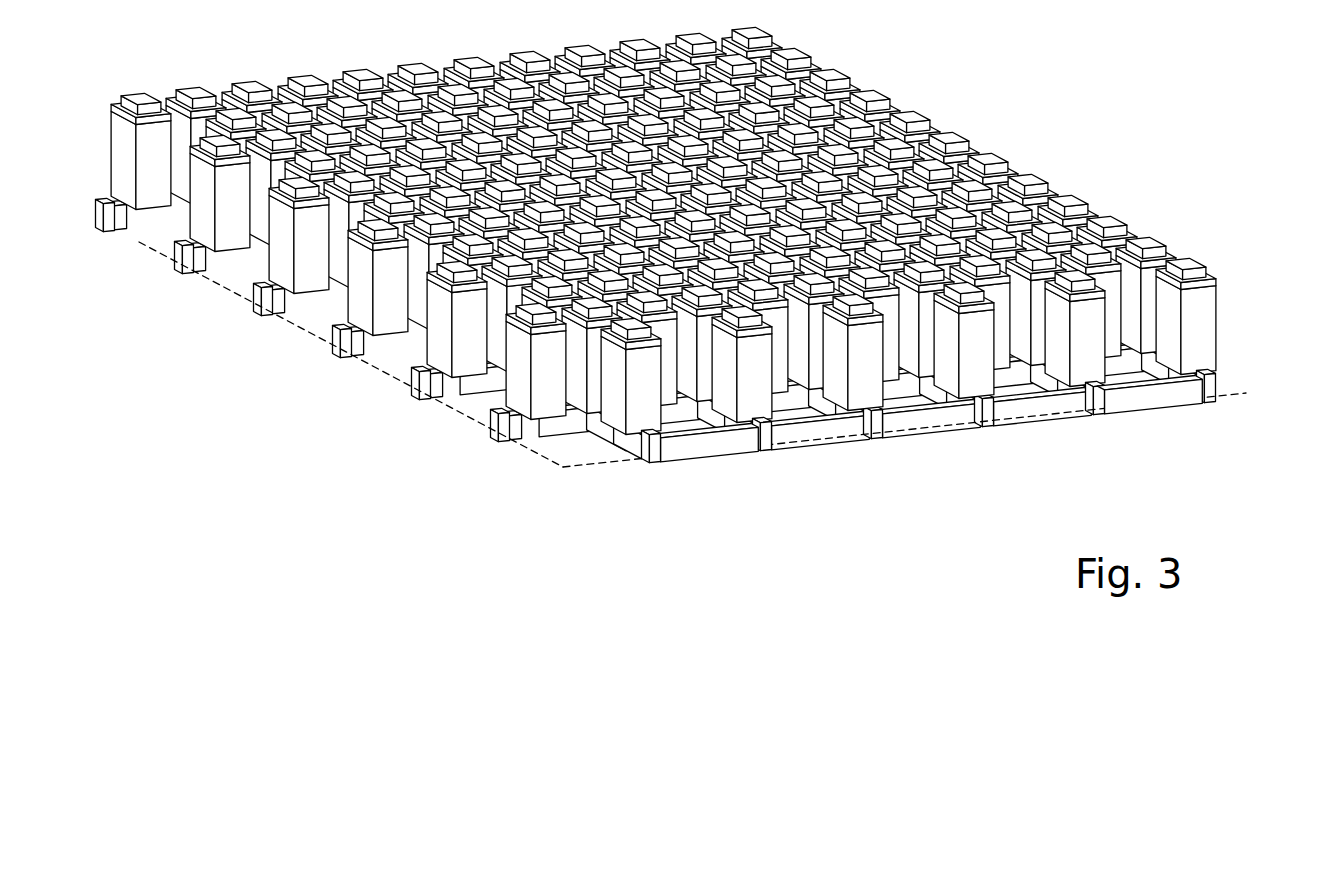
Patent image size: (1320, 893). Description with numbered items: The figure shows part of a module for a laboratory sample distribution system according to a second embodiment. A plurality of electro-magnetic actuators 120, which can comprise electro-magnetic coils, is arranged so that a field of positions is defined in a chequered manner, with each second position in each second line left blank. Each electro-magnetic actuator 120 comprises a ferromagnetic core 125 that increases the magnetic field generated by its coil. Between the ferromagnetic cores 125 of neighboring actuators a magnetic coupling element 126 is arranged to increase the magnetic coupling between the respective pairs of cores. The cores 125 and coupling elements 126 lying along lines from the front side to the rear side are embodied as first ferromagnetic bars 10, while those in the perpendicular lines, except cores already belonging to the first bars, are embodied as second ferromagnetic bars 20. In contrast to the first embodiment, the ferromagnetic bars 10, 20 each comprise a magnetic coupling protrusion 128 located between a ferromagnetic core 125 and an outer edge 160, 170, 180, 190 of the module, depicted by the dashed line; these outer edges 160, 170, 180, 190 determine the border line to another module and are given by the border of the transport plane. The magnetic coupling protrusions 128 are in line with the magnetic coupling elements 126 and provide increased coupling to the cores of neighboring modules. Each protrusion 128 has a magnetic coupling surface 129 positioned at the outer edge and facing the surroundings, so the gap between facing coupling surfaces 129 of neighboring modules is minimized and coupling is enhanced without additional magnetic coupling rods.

The first ferromagnetic bar 10 is at (692, 484).
The second ferromagnetic bar 20 is at (262, 362).
The electro-magnetic actuator 120 is at (356, 312).
The ferromagnetic core 125 is at (290, 186).
The magnetic coupling element 126 is at (427, 364).
The magnetic coupling protrusion 128 is at (262, 310).
The magnetic coupling surface 129 is at (330, 252).
The outer edge 160 is at (1150, 405).
The outer edge 170 is at (138, 244).
The outer edge 180 is at (103, 203).
The outer edge 190 is at (1236, 394).